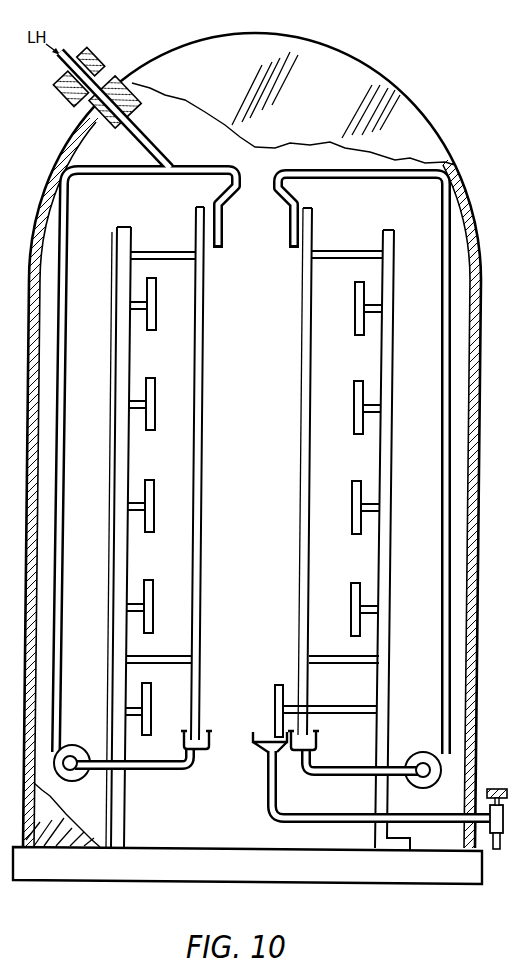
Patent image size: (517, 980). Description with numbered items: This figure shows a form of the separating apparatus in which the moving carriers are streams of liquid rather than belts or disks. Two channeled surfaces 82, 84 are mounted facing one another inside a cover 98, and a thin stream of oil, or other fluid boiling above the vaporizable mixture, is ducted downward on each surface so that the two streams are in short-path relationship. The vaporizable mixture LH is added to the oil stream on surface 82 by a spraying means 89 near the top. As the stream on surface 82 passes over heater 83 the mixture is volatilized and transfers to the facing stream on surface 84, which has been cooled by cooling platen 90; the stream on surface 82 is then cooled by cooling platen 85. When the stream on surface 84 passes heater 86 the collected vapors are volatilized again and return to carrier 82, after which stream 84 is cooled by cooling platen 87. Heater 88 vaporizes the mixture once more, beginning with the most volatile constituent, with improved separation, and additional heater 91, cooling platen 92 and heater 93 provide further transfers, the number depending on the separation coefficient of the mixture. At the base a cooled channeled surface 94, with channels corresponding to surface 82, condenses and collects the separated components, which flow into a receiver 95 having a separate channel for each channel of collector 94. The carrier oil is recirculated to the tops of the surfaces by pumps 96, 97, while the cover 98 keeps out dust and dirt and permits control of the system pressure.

The cover 98 is at (409, 90).
The spraying means 89 is at (225, 244).
The channeled surface 82 is at (205, 310).
The channeled surface 84 is at (302, 318).
The heater 83 is at (156, 310).
The cooling platen 85 is at (155, 412).
The heater 88 is at (154, 532).
The cooling platen 92 is at (153, 632).
The heater 93 is at (152, 684).
The cooling platen 90 is at (355, 312).
The heater 86 is at (355, 416).
The cooling platen 87 is at (352, 528).
The heater 91 is at (351, 630).
The cooled channeled surface 94 is at (275, 688).
The receiver 95 is at (266, 792).
The pump 96 is at (424, 788).
The pump 97 is at (87, 779).